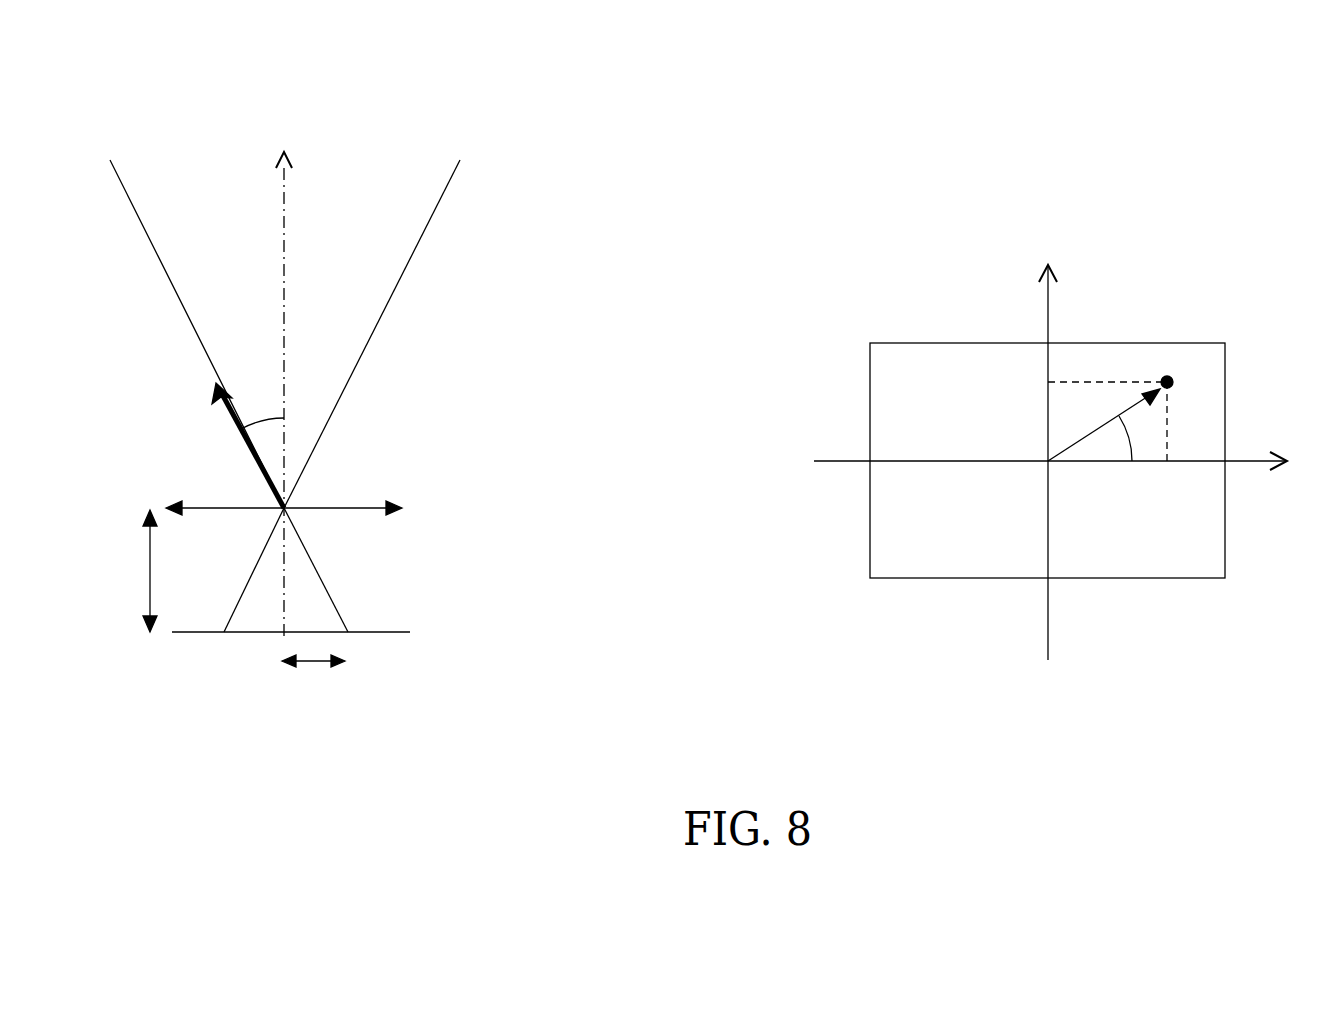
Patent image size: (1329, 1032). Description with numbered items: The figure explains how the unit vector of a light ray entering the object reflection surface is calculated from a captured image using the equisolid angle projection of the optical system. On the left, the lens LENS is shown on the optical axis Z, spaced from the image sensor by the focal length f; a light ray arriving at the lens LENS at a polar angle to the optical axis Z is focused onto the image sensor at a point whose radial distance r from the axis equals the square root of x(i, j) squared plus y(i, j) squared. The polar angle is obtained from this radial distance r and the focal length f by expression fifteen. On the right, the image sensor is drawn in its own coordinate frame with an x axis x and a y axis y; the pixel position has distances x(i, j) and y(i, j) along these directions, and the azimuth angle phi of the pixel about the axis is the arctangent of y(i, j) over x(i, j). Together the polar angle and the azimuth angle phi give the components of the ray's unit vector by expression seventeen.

The lens LENS is at (327, 510).
The optical axis Z is at (290, 368).
The focal length f is at (139, 571).
The radial distance of pixel (i, j) r is at (428, 702).
The x direction on the image sensor x is at (1068, 461).
The y direction on the image sensor y is at (1053, 437).
The azimuth angle of pixel (i, j) phi is at (1151, 461).